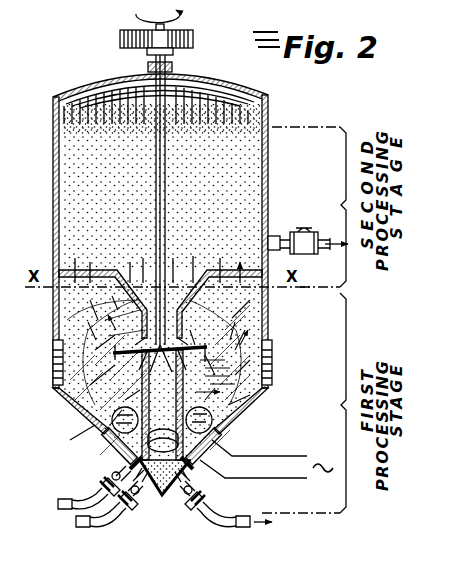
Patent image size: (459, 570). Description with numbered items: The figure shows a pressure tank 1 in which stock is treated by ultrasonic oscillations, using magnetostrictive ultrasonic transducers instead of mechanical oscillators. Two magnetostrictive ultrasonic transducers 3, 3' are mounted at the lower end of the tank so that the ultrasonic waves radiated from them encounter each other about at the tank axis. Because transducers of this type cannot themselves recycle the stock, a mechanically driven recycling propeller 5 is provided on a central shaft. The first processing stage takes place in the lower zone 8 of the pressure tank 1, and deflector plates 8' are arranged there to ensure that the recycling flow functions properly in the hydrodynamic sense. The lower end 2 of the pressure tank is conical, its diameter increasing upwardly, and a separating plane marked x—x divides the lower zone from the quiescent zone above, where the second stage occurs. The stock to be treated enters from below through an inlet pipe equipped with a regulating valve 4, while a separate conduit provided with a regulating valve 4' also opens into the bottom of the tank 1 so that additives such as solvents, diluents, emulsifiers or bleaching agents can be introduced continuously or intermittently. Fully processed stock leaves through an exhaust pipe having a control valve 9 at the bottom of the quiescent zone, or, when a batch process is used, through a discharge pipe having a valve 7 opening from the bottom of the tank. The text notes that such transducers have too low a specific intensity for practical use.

The pressure tank 1 is at (62, 97).
The lower end of the pressure tank 2 is at (92, 426).
The magnetostrictive ultrasonic transducer 3 is at (132, 417).
The magnetostrictive ultrasonic transducer 3' is at (242, 404).
The regulating valve 4 is at (115, 506).
The regulating valve 4' is at (94, 487).
The recycling propeller 5 is at (150, 352).
The valve 7 is at (200, 504).
The lower zone of the pressure tank 8 is at (147, 304).
The deflector plates 8' is at (157, 248).
The control valve 9 is at (302, 233).